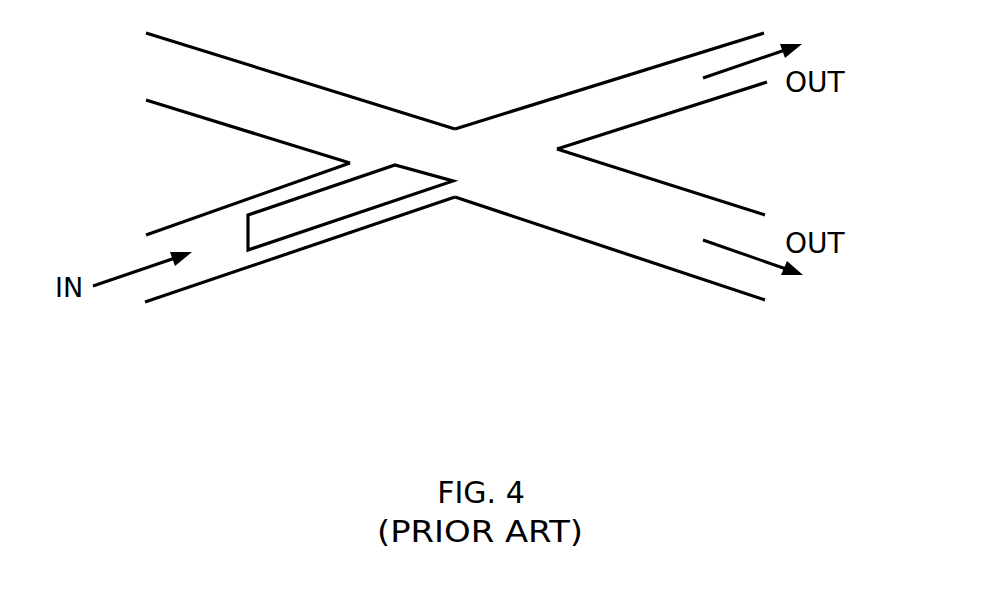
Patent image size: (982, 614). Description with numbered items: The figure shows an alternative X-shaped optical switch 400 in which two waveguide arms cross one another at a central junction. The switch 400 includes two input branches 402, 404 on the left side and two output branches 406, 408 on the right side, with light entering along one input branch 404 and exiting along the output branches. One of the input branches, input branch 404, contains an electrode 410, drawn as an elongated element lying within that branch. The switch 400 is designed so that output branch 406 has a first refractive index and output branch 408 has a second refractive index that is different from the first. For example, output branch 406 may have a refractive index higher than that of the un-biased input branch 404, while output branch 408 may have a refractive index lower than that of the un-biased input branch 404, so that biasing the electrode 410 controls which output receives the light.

The X-shaped optical switch 400 is at (477, 47).
The input branch 402 is at (307, 77).
The input branch 404 is at (217, 278).
The output branch 406 is at (637, 260).
The output branch 408 is at (640, 70).
The electrode 410 is at (340, 208).